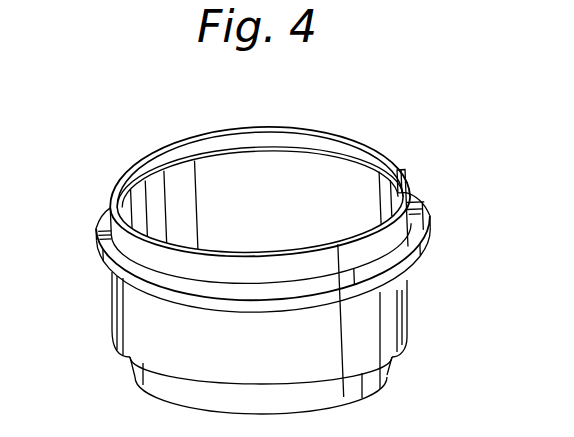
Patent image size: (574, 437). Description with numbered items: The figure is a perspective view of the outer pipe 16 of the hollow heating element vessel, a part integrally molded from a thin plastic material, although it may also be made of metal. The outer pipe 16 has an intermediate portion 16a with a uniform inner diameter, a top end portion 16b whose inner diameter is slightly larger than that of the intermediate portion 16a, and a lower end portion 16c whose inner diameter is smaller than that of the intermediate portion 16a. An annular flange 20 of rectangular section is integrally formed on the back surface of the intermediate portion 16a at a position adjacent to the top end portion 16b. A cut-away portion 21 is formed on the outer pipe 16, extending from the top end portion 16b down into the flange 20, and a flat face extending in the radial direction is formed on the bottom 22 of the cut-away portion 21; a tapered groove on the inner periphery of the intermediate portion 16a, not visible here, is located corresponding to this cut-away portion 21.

The outer pipe 16 is at (380, 146).
The intermediate portion 16a is at (115, 310).
The top end portion 16b is at (136, 172).
The lower end portion 16c is at (143, 369).
The annular flange 20 is at (423, 251).
The cut-away portion 21 is at (429, 211).
The bottom of the cut-away portion 22 is at (430, 220).